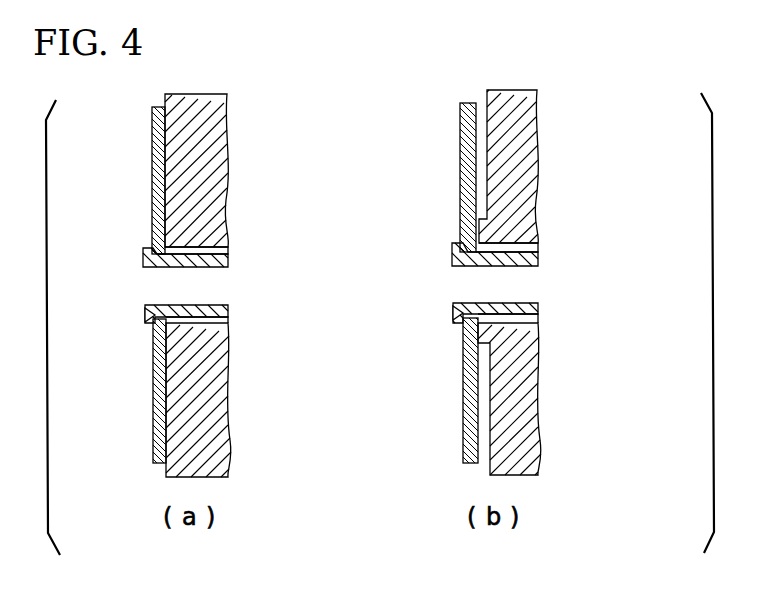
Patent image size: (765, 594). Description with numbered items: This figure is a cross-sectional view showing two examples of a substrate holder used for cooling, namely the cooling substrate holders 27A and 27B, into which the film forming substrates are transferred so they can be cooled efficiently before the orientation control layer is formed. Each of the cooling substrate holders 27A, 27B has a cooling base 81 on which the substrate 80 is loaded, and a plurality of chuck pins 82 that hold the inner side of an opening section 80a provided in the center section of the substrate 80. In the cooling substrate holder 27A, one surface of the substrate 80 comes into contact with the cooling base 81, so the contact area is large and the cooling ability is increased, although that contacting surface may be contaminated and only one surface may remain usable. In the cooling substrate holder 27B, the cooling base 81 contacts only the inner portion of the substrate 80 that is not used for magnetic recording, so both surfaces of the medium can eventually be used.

The cooling substrate holder 27A is at (255, 155).
The cooling substrate holder 27B is at (557, 155).
The substrate 80 is at (153, 457).
The opening section 80a is at (153, 308).
The cooling base 81 is at (228, 454).
The chuck pins 82 is at (143, 261).